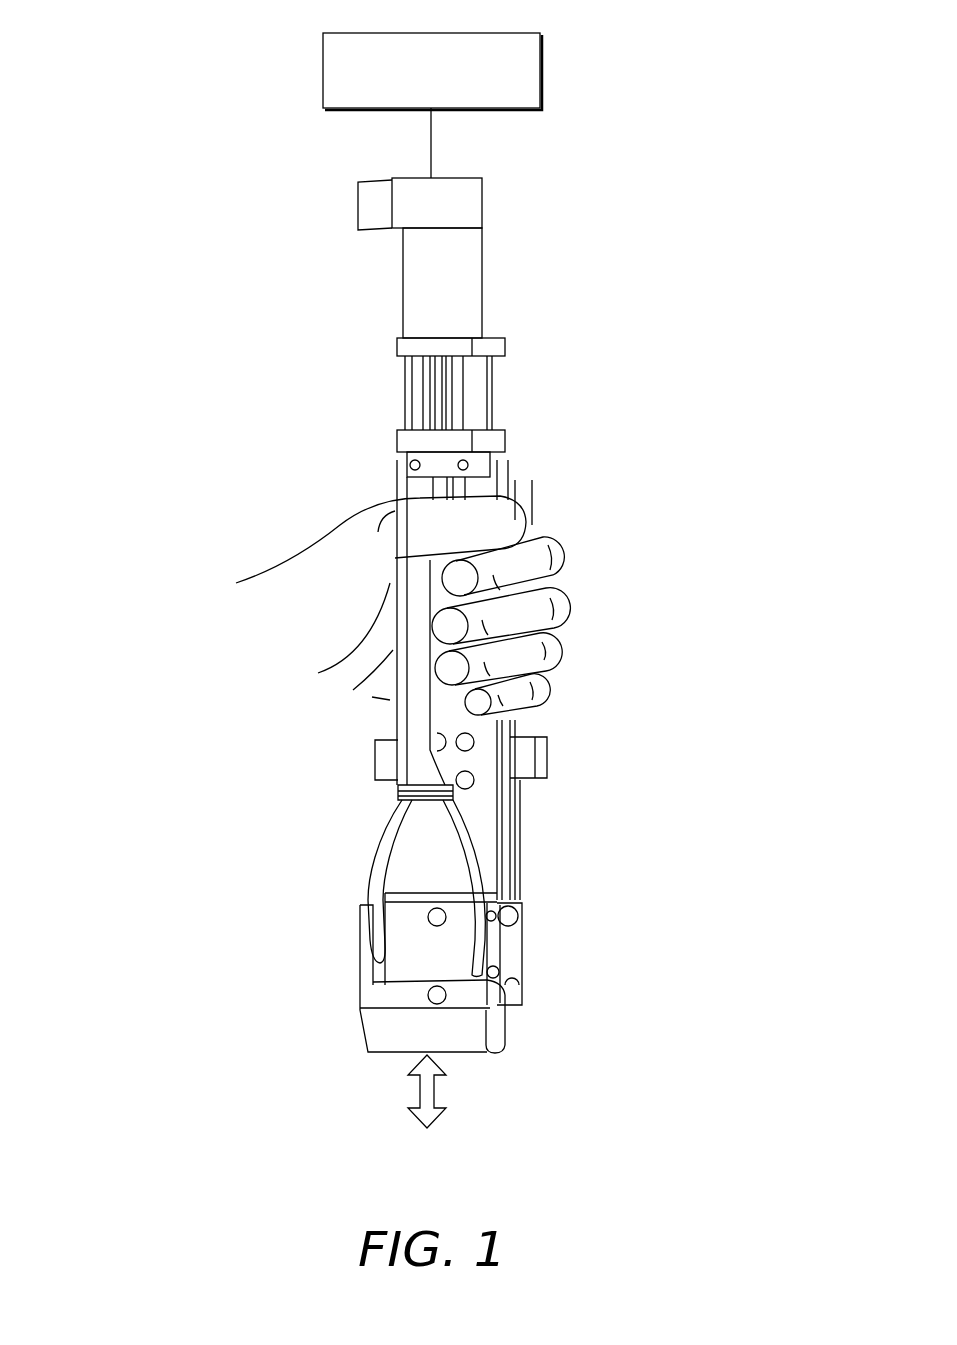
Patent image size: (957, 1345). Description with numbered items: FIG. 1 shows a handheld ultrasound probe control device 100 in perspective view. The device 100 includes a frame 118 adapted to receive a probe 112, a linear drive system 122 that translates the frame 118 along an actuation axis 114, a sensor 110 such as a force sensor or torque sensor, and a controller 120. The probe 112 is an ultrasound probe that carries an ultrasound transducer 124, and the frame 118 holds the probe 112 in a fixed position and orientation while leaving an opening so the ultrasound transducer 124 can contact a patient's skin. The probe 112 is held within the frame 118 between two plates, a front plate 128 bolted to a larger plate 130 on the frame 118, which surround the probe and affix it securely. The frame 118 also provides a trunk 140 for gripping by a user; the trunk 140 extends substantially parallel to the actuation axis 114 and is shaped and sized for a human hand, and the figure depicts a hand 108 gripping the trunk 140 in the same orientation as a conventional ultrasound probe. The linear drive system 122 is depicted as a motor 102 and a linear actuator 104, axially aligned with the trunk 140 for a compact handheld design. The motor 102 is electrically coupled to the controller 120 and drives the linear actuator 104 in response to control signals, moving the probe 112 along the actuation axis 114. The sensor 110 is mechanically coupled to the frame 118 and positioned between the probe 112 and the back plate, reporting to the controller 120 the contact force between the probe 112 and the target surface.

The device 100 is at (118, 108).
The motor 102 is at (468, 206).
The linear actuator 104 is at (465, 428).
The hand 108 is at (560, 648).
The sensor 110 is at (520, 915).
The probe 112 is at (455, 1040).
The actuation axis 114 is at (440, 1091).
The frame 118 is at (380, 697).
The controller 120 is at (516, 34).
The linear drive system 122 is at (290, 181).
The ultrasound transducer 124 is at (376, 1068).
The front plate 128 is at (360, 997).
The plate 130 is at (548, 758).
The trunk 140 is at (378, 480).